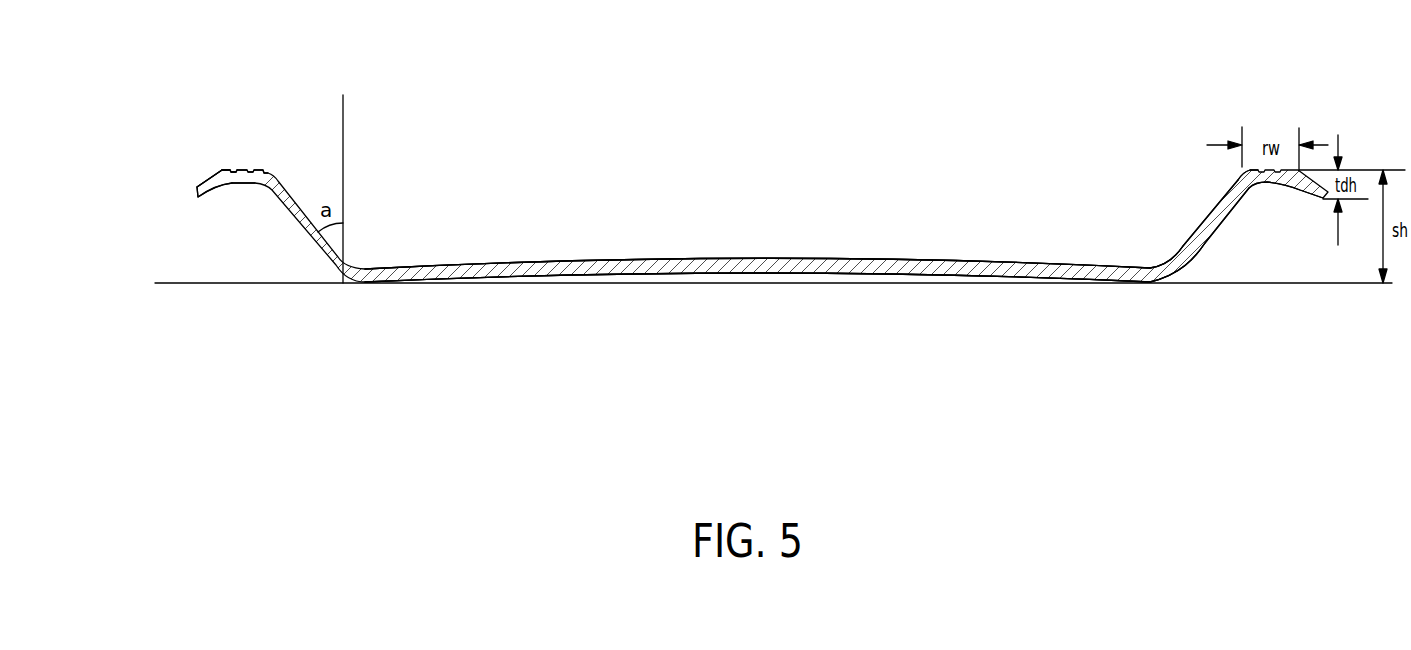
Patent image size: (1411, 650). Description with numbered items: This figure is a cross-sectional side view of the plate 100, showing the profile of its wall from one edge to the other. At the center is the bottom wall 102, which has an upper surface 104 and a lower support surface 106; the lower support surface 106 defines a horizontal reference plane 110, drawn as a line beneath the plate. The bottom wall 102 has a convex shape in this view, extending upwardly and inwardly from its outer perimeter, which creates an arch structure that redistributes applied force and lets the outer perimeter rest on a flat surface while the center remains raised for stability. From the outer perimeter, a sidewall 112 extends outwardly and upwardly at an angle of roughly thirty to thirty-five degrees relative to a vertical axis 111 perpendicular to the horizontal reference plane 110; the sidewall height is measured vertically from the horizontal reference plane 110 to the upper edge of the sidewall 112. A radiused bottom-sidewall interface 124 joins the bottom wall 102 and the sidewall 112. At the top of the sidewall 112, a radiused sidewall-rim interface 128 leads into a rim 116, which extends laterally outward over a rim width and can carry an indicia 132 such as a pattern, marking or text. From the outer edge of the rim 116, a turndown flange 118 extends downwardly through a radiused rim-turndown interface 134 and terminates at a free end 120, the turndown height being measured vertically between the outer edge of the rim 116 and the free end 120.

The plate 100 is at (537, 78).
The bottom wall 102 is at (655, 345).
The upper surface 104 is at (708, 258).
The lower support surface 106 is at (863, 277).
The horizontal reference plane 110 is at (1302, 283).
The vertical axis 111 is at (343, 123).
The sidewall 112 is at (1220, 213).
The rim 116 is at (248, 168).
The turndown flange 118 is at (208, 180).
The free end 120 is at (202, 198).
The bottom-sidewall interface 124 is at (1197, 263).
The sidewall-rim interface 128 is at (1247, 175).
The indicia 132 is at (1277, 187).
The rim-turndown interface 134 is at (225, 168).